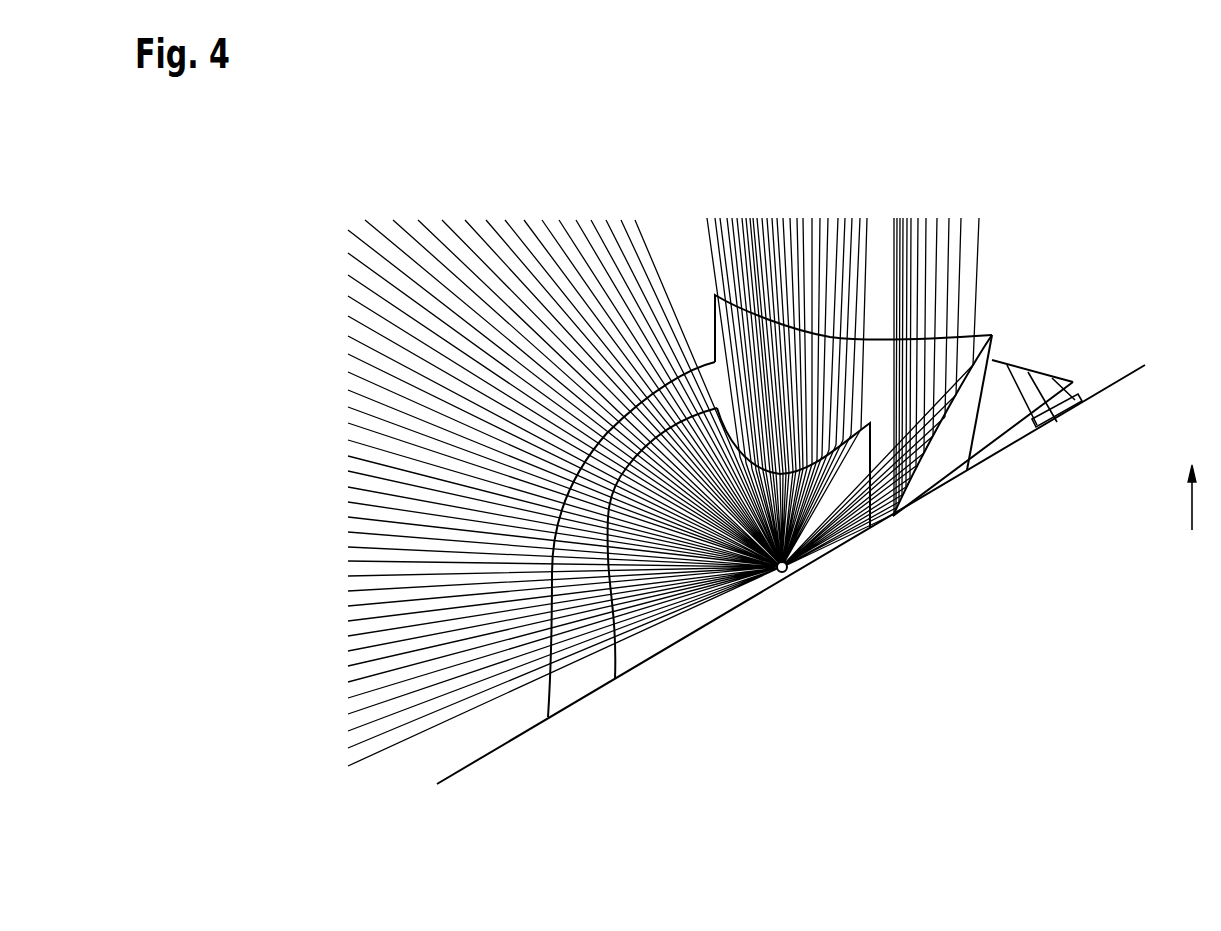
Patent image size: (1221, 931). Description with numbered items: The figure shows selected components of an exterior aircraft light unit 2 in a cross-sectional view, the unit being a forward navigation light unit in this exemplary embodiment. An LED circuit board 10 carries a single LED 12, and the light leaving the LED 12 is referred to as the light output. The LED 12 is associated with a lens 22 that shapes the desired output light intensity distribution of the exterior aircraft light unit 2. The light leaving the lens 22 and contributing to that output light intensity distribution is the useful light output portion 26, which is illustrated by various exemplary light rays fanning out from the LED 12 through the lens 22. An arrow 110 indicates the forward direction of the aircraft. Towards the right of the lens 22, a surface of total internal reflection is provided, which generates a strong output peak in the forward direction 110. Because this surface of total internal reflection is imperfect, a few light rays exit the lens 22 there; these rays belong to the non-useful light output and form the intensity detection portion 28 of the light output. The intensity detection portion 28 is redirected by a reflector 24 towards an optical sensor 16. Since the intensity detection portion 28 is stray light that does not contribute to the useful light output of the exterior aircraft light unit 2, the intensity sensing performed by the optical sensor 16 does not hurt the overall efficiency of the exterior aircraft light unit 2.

The exterior aircraft light unit 2 is at (316, 205).
The LED circuit board 10 is at (490, 755).
The LED 12 is at (784, 580).
The optical sensor 16 is at (1055, 417).
The lens 22 is at (583, 642).
The reflector 24 is at (1053, 370).
The useful light output portion 26 is at (890, 228).
The intensity detection portion 28 is at (998, 420).
The forward direction 110 is at (1193, 517).